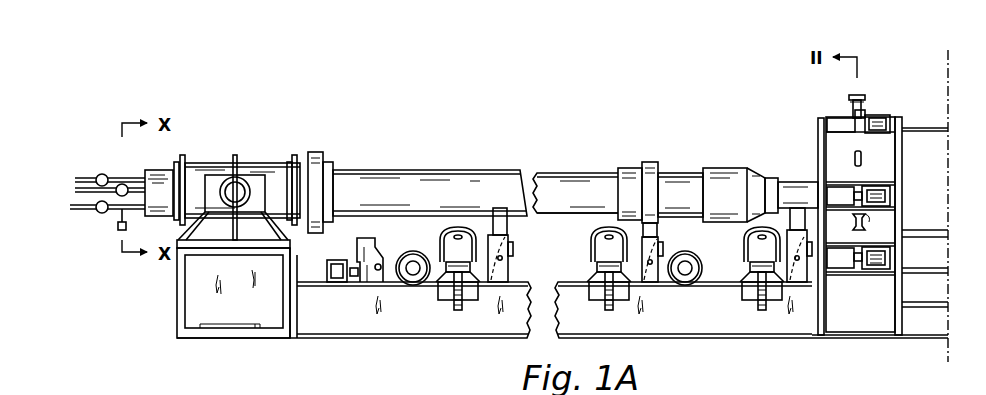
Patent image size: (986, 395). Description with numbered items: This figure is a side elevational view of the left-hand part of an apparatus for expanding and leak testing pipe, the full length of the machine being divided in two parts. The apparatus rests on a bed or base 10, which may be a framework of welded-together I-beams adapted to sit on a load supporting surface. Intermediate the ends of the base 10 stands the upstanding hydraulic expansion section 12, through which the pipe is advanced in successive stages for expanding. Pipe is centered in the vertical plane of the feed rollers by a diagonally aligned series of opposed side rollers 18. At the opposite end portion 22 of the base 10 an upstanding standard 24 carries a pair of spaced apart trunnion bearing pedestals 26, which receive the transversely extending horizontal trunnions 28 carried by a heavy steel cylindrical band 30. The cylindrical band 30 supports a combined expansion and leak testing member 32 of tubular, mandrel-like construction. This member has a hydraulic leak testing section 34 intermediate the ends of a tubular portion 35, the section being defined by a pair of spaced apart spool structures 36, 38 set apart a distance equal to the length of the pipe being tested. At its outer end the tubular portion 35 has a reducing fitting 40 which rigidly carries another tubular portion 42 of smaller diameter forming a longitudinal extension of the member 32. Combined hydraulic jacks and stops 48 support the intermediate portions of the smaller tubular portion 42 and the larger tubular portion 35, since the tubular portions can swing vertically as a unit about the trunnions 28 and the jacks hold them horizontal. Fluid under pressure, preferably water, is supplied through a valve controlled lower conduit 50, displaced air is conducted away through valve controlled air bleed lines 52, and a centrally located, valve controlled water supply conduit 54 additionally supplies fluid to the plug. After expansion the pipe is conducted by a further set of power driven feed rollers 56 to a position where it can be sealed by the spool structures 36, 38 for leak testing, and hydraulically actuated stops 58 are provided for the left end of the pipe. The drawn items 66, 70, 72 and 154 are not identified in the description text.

The bed or base 10 is at (730, 338).
The hydraulic expansion section 12 is at (927, 128).
The side rollers 18 is at (449, 240).
The opposite end portion 22 is at (312, 324).
The upstanding standard 24 is at (182, 293).
The trunnion bearing pedestals 26 is at (182, 240).
The horizontal trunnions 28 is at (232, 188).
The cylindrical band 30 is at (273, 163).
The combined expansion and leak testing member 32 is at (172, 160).
The hydraulic leak testing section 34 is at (438, 170).
The tubular portion 35 is at (683, 172).
The spool structure 36 is at (325, 161).
The spool structure 38 is at (647, 162).
The reducing fitting 40 is at (737, 168).
The tubular portion of reduced diameter 42 is at (797, 182).
The combined hydraulic jacks and stops 48 is at (510, 259).
The valve controlled lower conduit 50 is at (70, 208).
The air bleed lines 52 is at (85, 177).
The water supply conduit 54 is at (74, 191).
The power driven feed rollers 56 is at (417, 262).
The stops 58 is at (362, 248).
The indicator 66 is at (862, 158).
The drive unit 70 is at (838, 268).
The coupling 72 is at (868, 221).
The sensor 154 is at (118, 228).